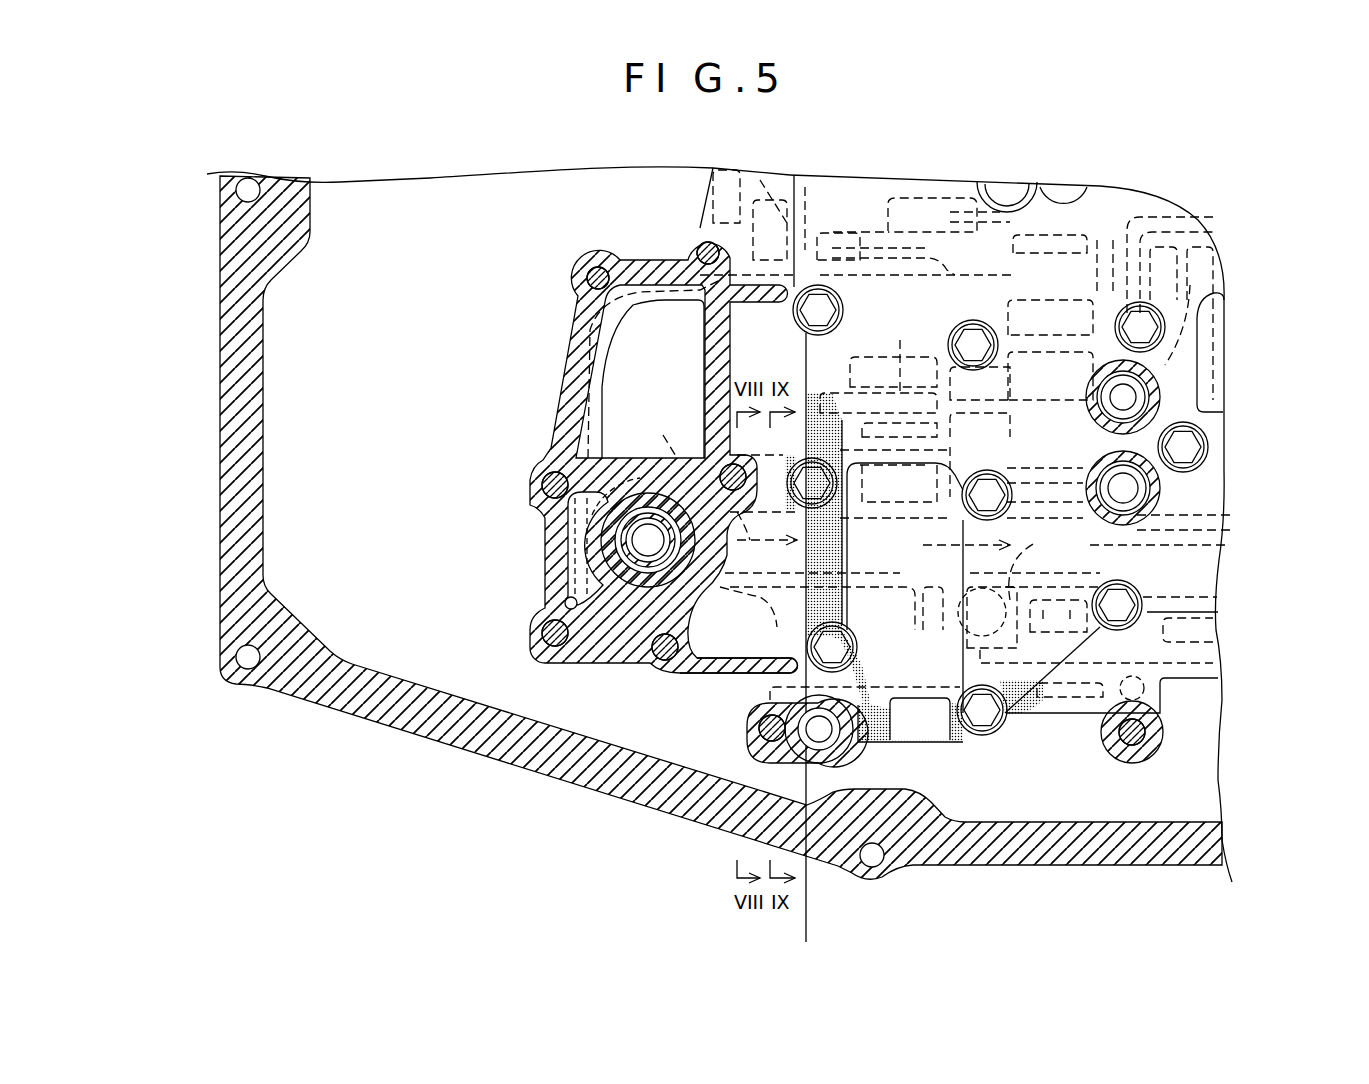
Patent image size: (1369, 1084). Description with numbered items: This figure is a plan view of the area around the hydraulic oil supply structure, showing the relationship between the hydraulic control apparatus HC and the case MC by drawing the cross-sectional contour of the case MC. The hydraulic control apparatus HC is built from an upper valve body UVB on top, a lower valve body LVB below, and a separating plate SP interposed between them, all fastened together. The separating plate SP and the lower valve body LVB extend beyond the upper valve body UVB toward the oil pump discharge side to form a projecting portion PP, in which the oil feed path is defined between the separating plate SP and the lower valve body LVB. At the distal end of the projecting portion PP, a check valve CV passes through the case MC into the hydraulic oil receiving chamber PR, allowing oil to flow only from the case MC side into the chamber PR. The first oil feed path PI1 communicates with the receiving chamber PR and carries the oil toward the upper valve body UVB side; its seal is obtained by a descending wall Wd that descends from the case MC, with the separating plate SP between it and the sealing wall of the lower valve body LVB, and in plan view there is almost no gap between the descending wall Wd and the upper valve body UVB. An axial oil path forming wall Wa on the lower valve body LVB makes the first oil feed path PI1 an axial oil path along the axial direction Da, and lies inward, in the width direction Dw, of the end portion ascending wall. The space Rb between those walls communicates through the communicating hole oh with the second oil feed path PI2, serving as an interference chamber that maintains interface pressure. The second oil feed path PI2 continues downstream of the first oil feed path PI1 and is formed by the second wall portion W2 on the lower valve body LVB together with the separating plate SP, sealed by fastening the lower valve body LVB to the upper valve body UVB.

The case MC is at (218, 403).
The hydraulic control apparatus HC is at (1107, 250).
The first oil feed path PI1 is at (648, 369).
The second oil feed path PI2 is at (869, 311).
The check valve CV is at (600, 535).
The hydraulic oil receiving chamber PR is at (550, 583).
The space Rb is at (697, 668).
The axial oil path forming wall Wa is at (703, 653).
The descending wall Wd is at (750, 697).
The communicating hole oh is at (905, 565).
The second wall portion W2 is at (1025, 582).
The upper valve body UVB is at (930, 748).
The separating plate SP is at (1063, 677).
The lower valve body LVB is at (1165, 653).
The axial direction Da is at (497, 361).
The width direction Dw is at (402, 380).
The projecting portion PP is at (530, 655).